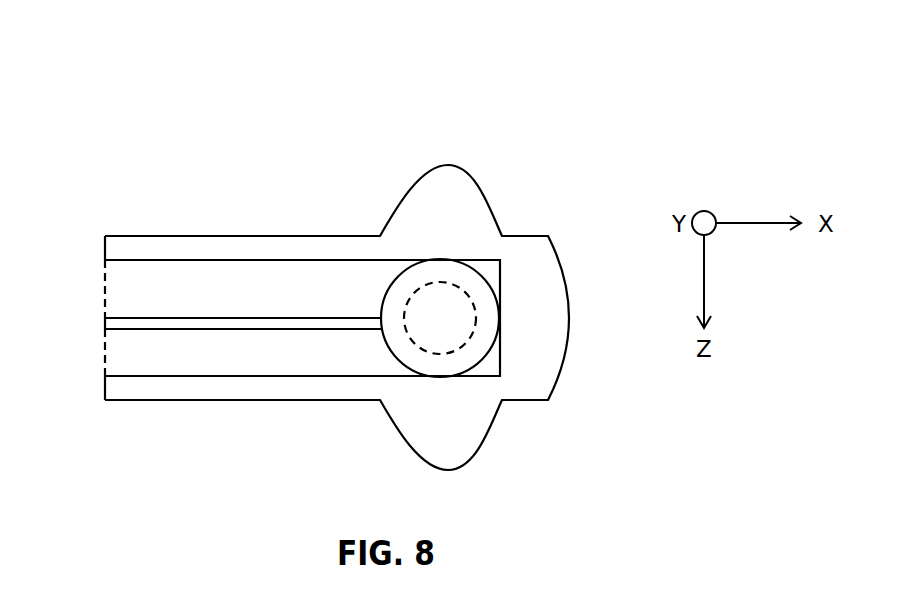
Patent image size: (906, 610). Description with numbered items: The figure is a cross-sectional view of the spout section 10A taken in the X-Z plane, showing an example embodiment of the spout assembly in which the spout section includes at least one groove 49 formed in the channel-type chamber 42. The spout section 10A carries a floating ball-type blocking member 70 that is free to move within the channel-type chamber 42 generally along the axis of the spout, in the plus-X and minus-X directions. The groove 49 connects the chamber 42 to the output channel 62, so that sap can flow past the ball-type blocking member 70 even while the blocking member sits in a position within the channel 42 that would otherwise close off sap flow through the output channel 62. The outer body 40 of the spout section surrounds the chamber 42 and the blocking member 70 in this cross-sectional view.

The spout section 10A is at (150, 133).
The housing 40 is at (298, 236).
The channel-type chamber 42 is at (249, 280).
The groove 49 is at (150, 320).
The blocking member 70 is at (463, 278).
The output channel 62 is at (468, 293).